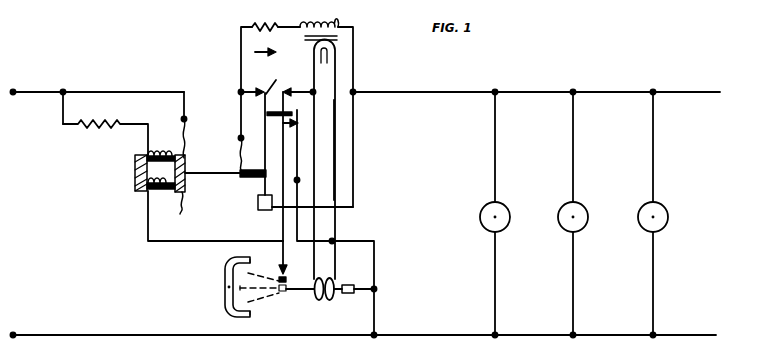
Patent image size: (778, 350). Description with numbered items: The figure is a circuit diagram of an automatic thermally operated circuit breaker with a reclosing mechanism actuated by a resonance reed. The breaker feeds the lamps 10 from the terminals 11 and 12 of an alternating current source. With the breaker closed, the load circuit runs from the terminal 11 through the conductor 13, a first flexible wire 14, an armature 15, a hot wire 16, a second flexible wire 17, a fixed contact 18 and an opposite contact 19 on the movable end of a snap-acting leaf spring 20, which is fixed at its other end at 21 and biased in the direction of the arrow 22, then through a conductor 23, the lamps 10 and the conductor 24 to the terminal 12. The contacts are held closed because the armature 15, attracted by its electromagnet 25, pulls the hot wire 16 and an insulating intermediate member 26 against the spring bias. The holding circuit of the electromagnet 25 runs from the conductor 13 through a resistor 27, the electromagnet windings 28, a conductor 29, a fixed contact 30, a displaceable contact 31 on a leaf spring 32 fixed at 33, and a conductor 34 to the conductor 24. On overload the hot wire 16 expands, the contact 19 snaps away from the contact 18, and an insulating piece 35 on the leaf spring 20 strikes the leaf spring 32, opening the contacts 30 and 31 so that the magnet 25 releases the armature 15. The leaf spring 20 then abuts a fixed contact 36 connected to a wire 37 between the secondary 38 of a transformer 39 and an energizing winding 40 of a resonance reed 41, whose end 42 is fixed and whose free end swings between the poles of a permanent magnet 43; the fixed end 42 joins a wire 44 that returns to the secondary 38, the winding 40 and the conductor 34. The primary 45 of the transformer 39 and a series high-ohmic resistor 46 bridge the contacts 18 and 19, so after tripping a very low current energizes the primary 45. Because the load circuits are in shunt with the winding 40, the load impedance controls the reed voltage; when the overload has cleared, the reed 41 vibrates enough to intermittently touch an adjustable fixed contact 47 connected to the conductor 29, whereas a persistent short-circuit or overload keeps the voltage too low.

The lamps 10 is at (579, 213).
The terminal 11 is at (18, 85).
The terminal 12 is at (13, 332).
The conductor 13 is at (134, 92).
The first flexible wire 14 is at (193, 137).
The armature 15 is at (185, 208).
The hot wire 16 is at (210, 175).
The second flexible wire 17 is at (234, 152).
The fixed contact 18 is at (251, 84).
The opposite contact 19 is at (275, 80).
The leaf spring 20 is at (265, 153).
The fixed end of leaf spring 21 is at (258, 207).
The arrow 22 is at (276, 52).
The conductor 23 is at (452, 92).
The conductor 24 is at (440, 334).
The electromagnet 25 is at (135, 183).
The intermediate member 26 is at (255, 179).
The resistor 27 is at (106, 118).
The electromagnet windings 28 is at (164, 153).
The conductor 29 is at (162, 243).
The fixed contact 30 is at (283, 130).
The displaceable contact 31 is at (297, 133).
The leaf spring 32 is at (298, 156).
The fixed end of leaf spring 33 is at (298, 181).
The conductor 34 is at (305, 243).
The insulating piece 35 is at (281, 106).
The fixed contact 36 is at (290, 90).
The wire 37 is at (312, 174).
The secondary 38 is at (324, 160).
The transformer 39 is at (380, 29).
The energizing winding 40 is at (320, 302).
The resonance reed 41 is at (283, 316).
The fixed end of reed 42 is at (348, 295).
The permanent magnet 43 is at (225, 292).
The wire 44 is at (334, 140).
The primary 45 is at (320, 20).
The resistor 46 is at (274, 26).
The fixed contact 47 is at (283, 276).